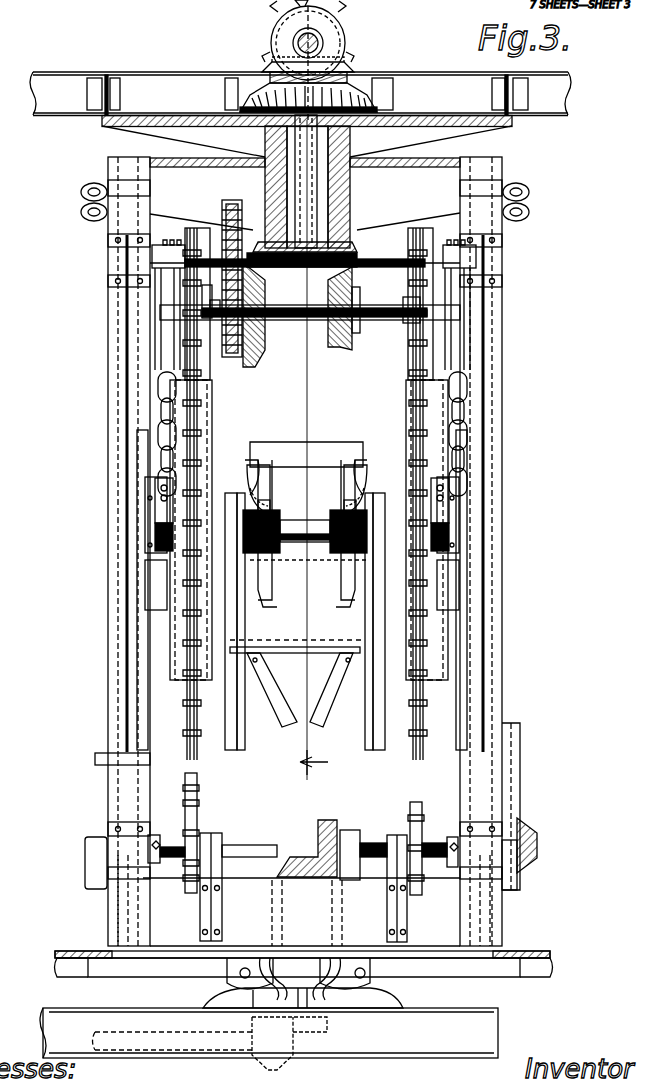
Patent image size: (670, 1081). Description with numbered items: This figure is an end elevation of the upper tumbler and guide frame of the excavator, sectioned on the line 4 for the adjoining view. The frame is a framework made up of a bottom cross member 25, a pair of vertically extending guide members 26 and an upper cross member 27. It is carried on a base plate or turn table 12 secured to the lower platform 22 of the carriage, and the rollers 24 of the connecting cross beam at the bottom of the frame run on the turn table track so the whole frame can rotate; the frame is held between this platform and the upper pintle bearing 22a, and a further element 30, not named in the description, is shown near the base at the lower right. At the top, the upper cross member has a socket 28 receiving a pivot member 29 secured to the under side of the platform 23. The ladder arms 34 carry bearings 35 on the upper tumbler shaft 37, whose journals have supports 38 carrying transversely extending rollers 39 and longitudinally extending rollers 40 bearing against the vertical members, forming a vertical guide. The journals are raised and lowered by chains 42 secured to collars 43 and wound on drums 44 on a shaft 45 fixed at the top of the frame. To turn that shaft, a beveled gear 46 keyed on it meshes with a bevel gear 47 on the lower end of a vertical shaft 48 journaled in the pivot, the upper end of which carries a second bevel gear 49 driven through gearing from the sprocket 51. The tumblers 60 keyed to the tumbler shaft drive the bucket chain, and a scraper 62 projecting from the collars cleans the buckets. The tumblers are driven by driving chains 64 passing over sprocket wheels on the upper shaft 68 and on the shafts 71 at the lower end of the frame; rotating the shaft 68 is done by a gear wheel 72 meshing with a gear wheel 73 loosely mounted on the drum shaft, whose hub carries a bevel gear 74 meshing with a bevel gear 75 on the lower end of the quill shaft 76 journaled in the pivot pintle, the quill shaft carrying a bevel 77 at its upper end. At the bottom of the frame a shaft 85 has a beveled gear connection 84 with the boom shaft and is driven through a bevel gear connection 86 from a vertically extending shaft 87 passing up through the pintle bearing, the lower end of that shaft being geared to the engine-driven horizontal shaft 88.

The section line 4 is at (314, 768).
The turn table 12 is at (383, 1000).
The lower platform 22 is at (269, 1033).
The upper pintle bearing 22a is at (302, 965).
The platform 23 is at (530, 78).
The rollers 24 is at (252, 988).
The bottom cross member 25 is at (437, 922).
The vertically extending guide members 26 is at (115, 598).
The upper cross member 27 is at (440, 162).
The socket 28 is at (348, 199).
The pivot member 29 is at (348, 181).
The base plate 30 is at (528, 958).
The arms 34 is at (245, 625).
The bearings 35 is at (230, 493).
The upper tumbler shaft 37 is at (312, 528).
The supports 38 is at (160, 522).
The transversely extending rollers 39 is at (137, 440).
The longitudinally extending rollers 40 is at (145, 493).
The chains 42 is at (160, 388).
The collars 43 is at (157, 540).
The drums 44 is at (153, 332).
The shaft 45 is at (382, 317).
The beveled gear 46 is at (345, 345).
The bevel gear 47 is at (310, 285).
The vertical shaft 48 is at (348, 215).
The second bevel gear 49 is at (345, 70).
The sprocket 51 is at (340, 33).
The tumblers 60 is at (262, 502).
The scraper 62 is at (283, 452).
The driving chains 64 is at (192, 785).
The shaft 68 is at (372, 258).
The shafts 71 is at (166, 845).
The gear wheel 72 is at (232, 205).
The gear wheel 73 is at (232, 358).
The bevel gear 74 is at (255, 367).
The bevel gear 75 is at (345, 253).
The quill shaft 76 is at (293, 167).
The bevel 77 is at (255, 95).
The beveled gear connection 84 is at (538, 840).
The shaft 85 is at (370, 840).
The bevel gear connection 86 is at (312, 858).
The vertically extending shaft 87 is at (355, 914).
The horizontal shaft 88 is at (183, 1040).